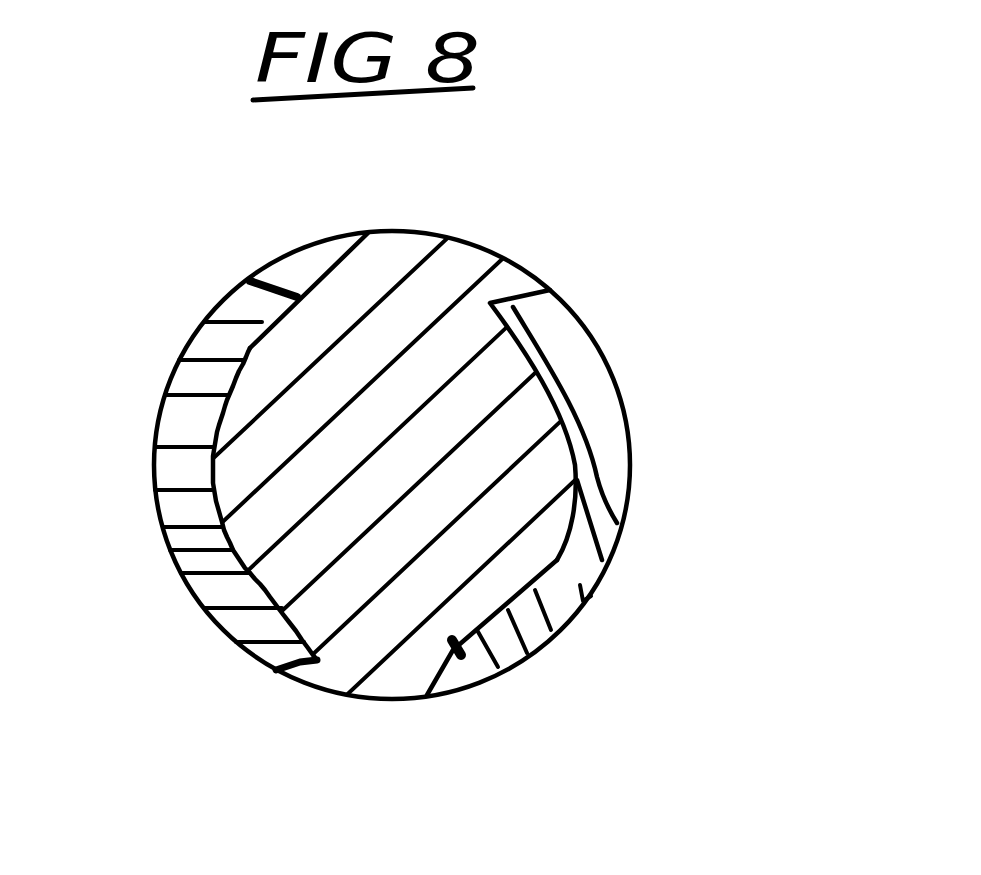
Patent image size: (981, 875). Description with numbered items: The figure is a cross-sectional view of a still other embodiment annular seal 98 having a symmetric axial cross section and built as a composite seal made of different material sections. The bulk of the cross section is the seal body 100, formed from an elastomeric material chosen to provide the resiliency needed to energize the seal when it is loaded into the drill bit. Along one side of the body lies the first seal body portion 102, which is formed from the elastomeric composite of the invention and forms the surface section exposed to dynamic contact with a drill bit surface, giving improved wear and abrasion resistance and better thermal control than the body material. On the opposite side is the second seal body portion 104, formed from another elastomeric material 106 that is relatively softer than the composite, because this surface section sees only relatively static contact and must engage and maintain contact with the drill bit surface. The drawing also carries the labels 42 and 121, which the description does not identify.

The annular seal 98 is at (545, 250).
The seal body 100 is at (413, 230).
The first seal body portion 102 is at (237, 303).
The second seal body portion 104 is at (625, 510).
The elastomeric material 106 is at (580, 613).
The cable 42 is at (205, 550).
The bottom portion 121 is at (393, 683).